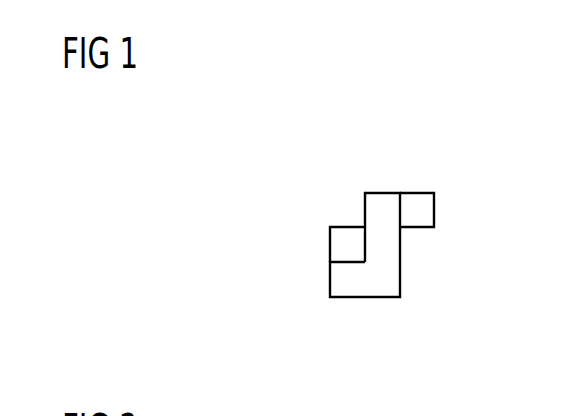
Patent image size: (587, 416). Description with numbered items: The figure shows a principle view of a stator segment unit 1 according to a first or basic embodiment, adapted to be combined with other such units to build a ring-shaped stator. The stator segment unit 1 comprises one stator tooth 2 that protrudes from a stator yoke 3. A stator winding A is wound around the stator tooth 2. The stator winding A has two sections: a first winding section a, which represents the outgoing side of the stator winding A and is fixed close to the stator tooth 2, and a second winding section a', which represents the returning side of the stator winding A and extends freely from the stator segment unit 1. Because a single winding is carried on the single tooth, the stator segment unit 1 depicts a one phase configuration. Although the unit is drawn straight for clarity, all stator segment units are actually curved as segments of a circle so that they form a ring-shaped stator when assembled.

The stator segment unit 1 is at (408, 173).
The stator tooth 2 is at (378, 202).
The stator yoke 3 is at (375, 283).
The stator winding A is at (342, 222).
The first winding section a is at (347, 244).
The second winding section a' is at (417, 210).